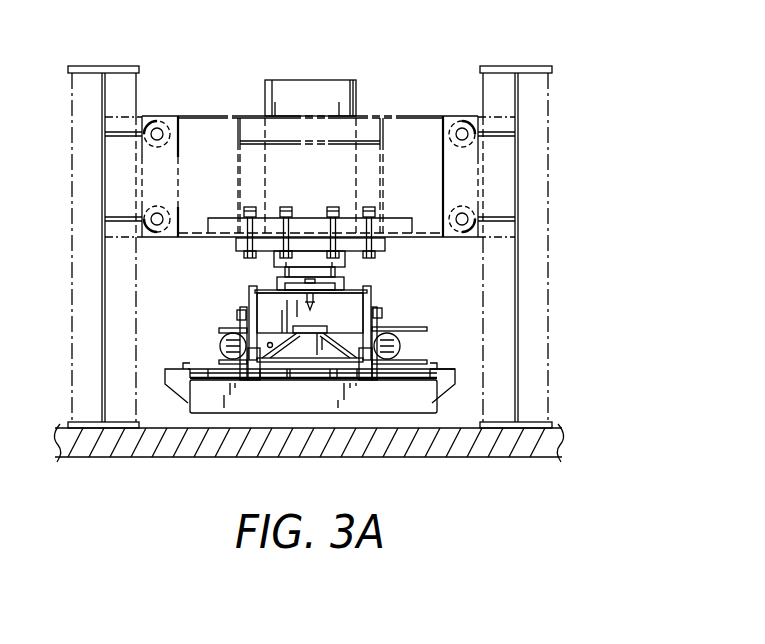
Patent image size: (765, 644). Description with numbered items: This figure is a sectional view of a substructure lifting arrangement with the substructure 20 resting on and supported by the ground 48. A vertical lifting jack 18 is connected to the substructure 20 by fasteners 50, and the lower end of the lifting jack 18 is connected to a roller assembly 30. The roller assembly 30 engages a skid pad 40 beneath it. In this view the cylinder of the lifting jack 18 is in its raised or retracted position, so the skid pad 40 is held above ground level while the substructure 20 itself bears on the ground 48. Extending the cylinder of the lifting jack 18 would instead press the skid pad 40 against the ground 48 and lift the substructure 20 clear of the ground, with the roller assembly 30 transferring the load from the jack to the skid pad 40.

The vertical lifting jack 18 is at (318, 90).
The substructure 20 is at (535, 178).
The roller assembly 30 is at (338, 312).
The skid pad 40 is at (405, 398).
The ground 48 is at (518, 450).
The fasteners 50 is at (373, 255).